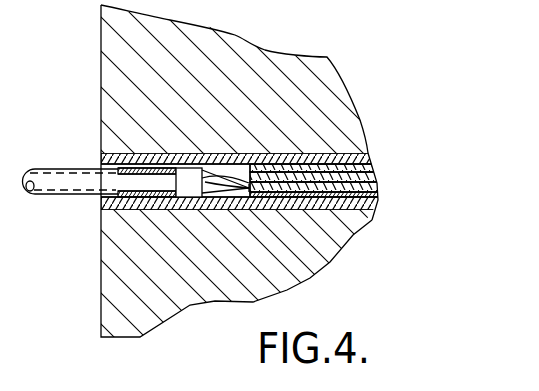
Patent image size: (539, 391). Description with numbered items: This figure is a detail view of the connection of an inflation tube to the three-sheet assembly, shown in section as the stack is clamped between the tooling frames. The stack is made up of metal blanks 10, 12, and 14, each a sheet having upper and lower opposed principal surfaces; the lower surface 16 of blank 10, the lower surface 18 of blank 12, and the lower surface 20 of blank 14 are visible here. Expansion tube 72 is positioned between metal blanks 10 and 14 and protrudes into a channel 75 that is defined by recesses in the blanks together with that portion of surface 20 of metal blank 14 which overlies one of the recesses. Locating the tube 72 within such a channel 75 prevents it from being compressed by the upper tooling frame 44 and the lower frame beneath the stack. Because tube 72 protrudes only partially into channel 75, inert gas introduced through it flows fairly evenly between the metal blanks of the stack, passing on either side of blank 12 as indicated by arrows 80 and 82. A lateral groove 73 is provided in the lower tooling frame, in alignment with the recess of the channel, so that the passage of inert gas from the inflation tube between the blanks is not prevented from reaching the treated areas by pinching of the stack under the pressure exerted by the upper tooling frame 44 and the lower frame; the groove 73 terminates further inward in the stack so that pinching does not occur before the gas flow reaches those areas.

The upper tooling frame 44 is at (290, 62).
The metal blank 14 is at (157, 119).
The arrow 80 is at (222, 170).
The principal surface 20 is at (240, 178).
The channel 75 is at (251, 186).
The expansion tube 72 is at (72, 194).
The principal surface 16 is at (128, 212).
The metal blank 10 is at (160, 210).
The arrow 82 is at (197, 199).
The principal surface 18 is at (246, 190).
The metal blank 12 is at (296, 184).
The lateral groove 73 is at (350, 203).